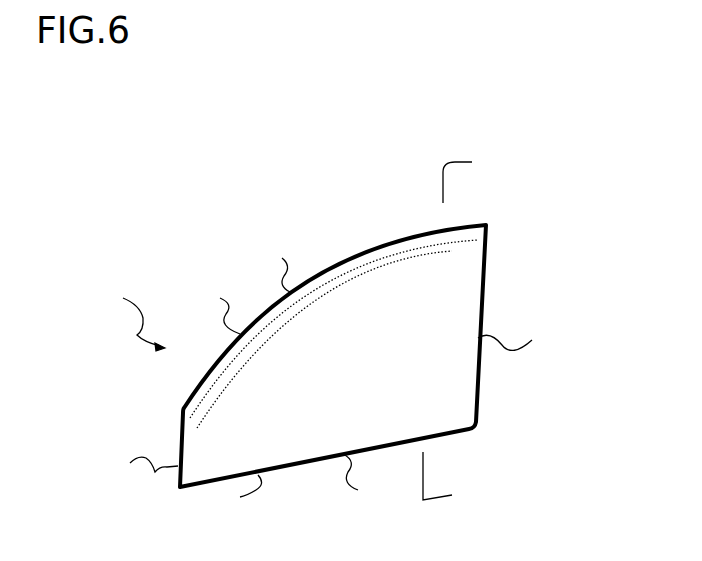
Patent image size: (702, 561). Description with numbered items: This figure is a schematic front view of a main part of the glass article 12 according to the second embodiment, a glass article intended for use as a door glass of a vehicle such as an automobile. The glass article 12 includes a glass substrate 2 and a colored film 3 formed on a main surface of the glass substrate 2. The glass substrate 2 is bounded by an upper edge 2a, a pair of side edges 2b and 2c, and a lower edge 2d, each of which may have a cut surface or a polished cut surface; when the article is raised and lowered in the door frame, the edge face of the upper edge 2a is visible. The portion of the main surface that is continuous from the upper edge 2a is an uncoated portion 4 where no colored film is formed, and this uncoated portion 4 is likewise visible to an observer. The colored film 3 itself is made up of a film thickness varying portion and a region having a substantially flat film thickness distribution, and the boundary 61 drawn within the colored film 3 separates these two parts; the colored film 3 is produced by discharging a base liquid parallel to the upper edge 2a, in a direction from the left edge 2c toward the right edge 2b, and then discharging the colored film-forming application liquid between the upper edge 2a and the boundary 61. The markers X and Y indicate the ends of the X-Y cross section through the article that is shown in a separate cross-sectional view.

The glass substrate 2 is at (251, 505).
The upper edge 2a is at (213, 310).
The side edge 2b is at (524, 341).
The side edge 2c is at (132, 469).
The lower edge 2d is at (367, 485).
The colored film 3 is at (333, 356).
The uncoated portion 4 is at (277, 264).
The glass article 12 is at (121, 317).
The boundary 61 is at (346, 262).
The X-Y cross section reference X is at (470, 178).
The X-Y cross section reference Y is at (449, 482).